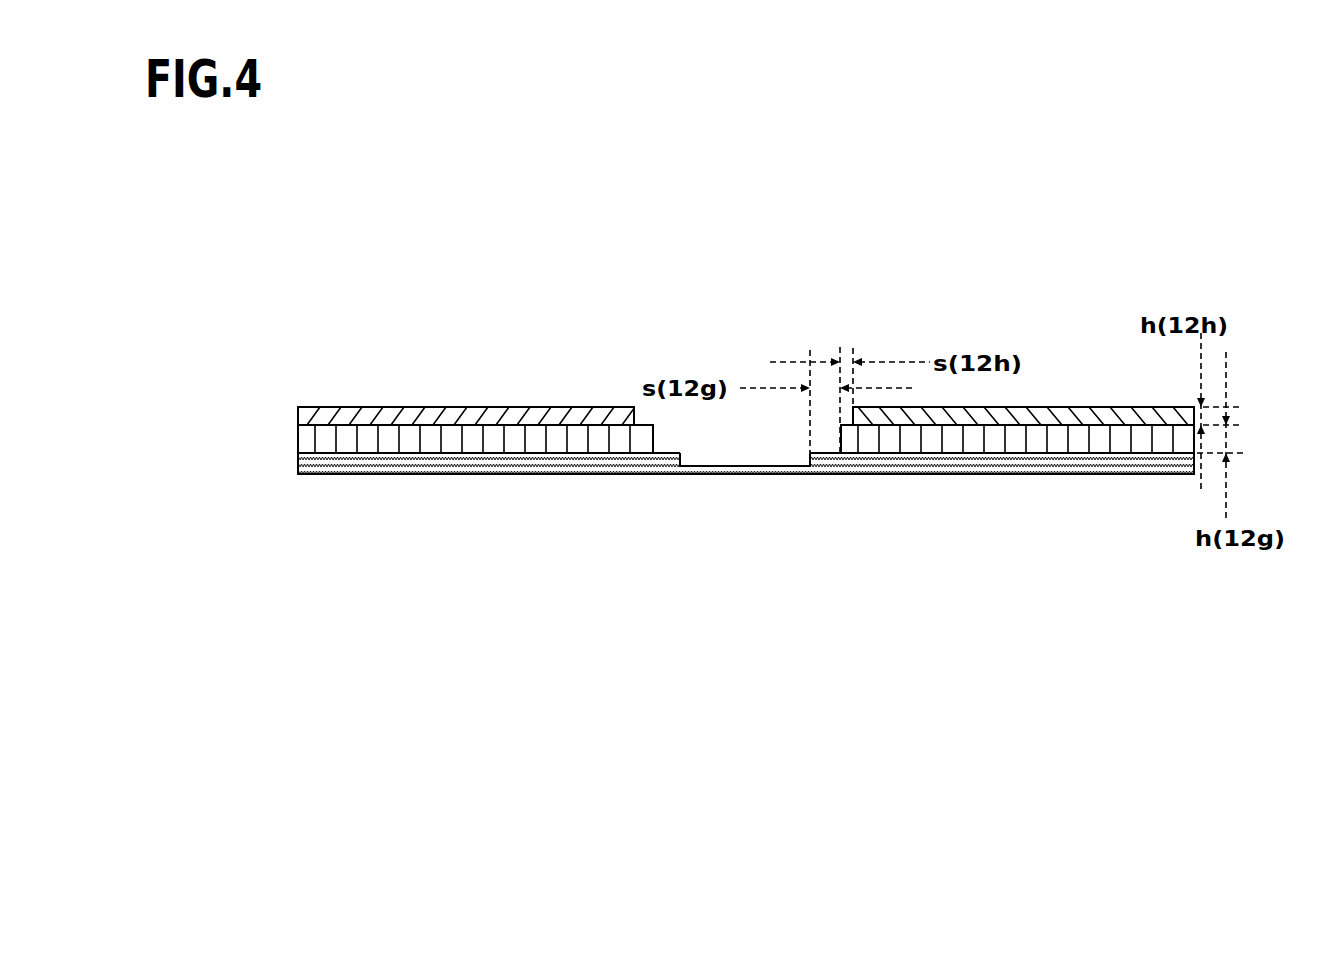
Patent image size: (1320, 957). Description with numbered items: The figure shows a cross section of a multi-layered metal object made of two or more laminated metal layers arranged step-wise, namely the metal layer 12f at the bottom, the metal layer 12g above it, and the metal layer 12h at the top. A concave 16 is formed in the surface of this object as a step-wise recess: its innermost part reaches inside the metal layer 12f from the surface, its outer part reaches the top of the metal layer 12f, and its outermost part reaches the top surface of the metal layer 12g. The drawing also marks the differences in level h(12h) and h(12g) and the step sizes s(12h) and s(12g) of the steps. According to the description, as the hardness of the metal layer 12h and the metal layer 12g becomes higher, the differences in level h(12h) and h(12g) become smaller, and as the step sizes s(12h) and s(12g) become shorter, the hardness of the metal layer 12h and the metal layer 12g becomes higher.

The metal layer 12f is at (298, 476).
The metal layer 12g is at (310, 441).
The metal layer 12h is at (297, 410).
The concave 16 is at (746, 427).